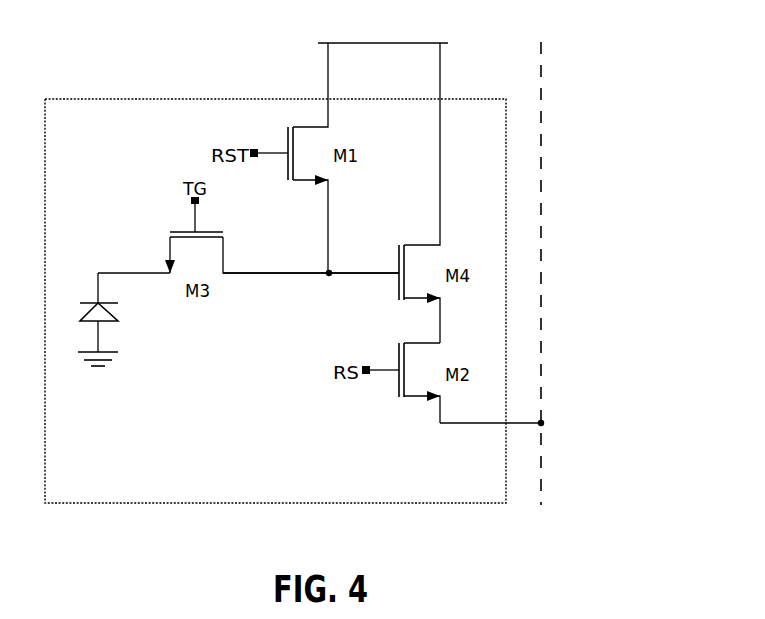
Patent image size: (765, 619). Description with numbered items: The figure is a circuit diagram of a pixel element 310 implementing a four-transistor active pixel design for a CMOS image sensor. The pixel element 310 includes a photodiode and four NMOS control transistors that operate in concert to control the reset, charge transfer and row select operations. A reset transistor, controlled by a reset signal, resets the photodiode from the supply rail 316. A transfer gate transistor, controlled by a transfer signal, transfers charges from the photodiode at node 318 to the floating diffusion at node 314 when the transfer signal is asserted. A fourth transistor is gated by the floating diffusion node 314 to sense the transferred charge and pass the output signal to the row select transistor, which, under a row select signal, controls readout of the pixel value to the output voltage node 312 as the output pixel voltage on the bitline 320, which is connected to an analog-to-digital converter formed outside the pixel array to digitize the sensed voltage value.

The pixel element 310 is at (150, 99).
The output voltage node 312 is at (448, 425).
The floating diffusion node 314 is at (329, 277).
The supply voltage Vdd rail 316 is at (420, 43).
The photodiode node 318 is at (133, 272).
The bitline 320 is at (542, 118).